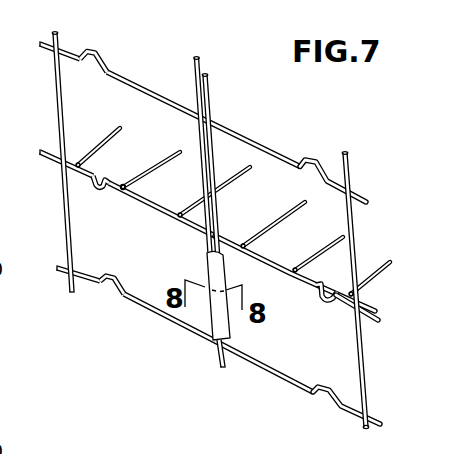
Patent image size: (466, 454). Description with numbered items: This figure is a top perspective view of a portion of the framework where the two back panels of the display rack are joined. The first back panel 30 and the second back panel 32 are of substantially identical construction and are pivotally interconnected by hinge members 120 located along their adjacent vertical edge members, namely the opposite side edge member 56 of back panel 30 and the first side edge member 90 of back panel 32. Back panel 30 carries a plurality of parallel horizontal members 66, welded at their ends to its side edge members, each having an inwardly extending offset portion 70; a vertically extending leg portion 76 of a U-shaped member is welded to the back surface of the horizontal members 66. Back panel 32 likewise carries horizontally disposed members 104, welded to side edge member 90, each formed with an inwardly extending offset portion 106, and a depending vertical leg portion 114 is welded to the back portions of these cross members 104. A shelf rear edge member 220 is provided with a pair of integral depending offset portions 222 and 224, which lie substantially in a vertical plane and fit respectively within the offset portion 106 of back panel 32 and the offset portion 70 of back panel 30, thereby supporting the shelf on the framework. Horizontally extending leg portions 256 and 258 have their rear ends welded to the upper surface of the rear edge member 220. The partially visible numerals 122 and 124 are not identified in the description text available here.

The first back panel 30 is at (375, 286).
The second back panel 32 is at (42, 162).
The opposite side edge member 56 is at (215, 101).
The horizontal members 66 is at (275, 156).
The inwardly extending offset portion 70 is at (317, 162).
The vertically extending leg portion 76 is at (365, 242).
The first side edge member 90 is at (193, 87).
The horizontally disposed members 104 is at (118, 78).
The inwardly extending offset portion 106 is at (97, 56).
The depending vertical leg portion 114 is at (63, 213).
The hinge member 120 is at (233, 337).
The wire 122 is at (236, 448).
The wire 124 is at (188, 448).
The rear edge member 220 is at (282, 275).
The depending offset portion 222 is at (123, 192).
The depending offset portion 224 is at (333, 303).
The horizontally extending leg portion 256 is at (167, 148).
The horizontally extending leg portion 258 is at (108, 137).